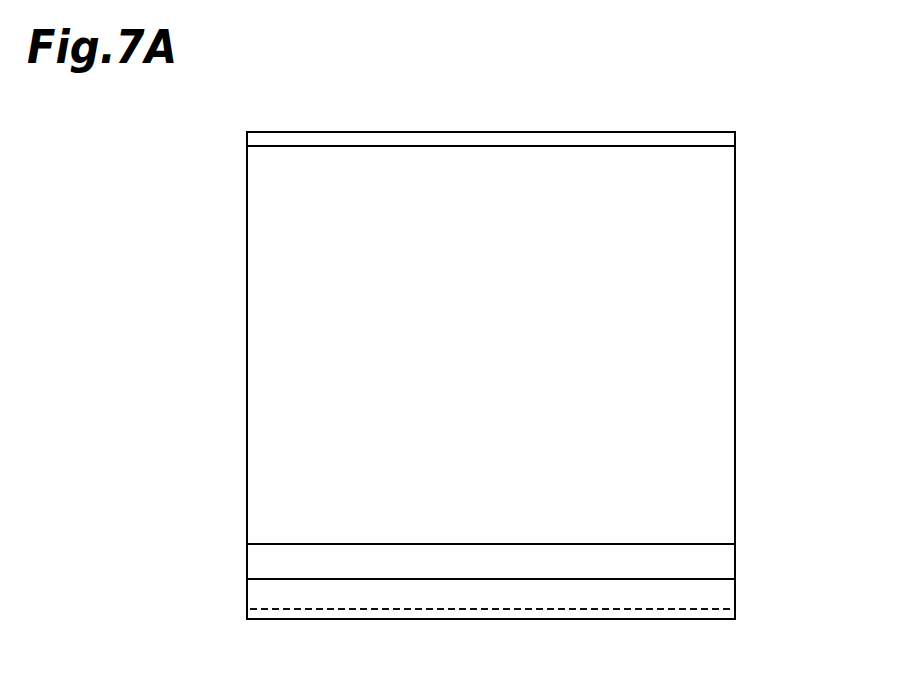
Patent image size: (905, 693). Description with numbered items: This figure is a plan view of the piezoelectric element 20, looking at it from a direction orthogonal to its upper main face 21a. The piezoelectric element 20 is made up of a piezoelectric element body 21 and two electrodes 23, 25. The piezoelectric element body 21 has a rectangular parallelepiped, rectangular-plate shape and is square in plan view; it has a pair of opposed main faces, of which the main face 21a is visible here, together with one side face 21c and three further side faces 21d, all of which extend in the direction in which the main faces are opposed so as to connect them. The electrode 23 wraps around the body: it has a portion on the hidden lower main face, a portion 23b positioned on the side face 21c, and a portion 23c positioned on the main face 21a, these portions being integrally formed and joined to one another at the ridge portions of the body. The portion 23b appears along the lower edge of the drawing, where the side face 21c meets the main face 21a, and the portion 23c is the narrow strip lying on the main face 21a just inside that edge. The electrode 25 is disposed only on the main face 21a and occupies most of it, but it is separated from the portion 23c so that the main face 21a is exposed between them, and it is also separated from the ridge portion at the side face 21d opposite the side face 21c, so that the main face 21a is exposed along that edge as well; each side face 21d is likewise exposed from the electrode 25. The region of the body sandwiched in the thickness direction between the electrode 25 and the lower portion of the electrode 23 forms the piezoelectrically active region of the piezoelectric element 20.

The piezoelectric element 20 is at (764, 159).
The piezoelectric element body 21 is at (246, 560).
The main face 21a is at (557, 562).
The side face 21c is at (643, 612).
The side face 21d is at (531, 132).
The electrode 23 is at (645, 577).
The portion 23b is at (520, 617).
The portion 23c is at (422, 597).
The electrode 25 is at (285, 282).